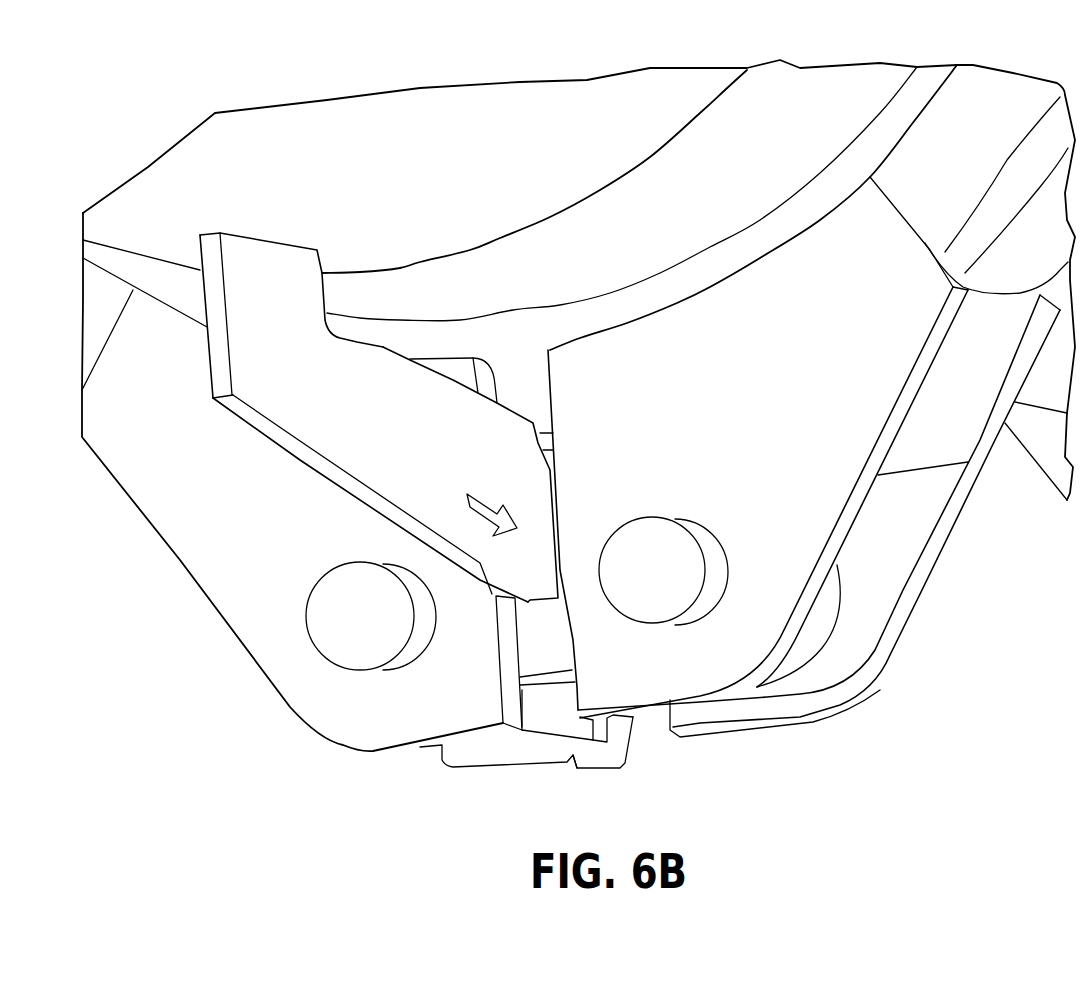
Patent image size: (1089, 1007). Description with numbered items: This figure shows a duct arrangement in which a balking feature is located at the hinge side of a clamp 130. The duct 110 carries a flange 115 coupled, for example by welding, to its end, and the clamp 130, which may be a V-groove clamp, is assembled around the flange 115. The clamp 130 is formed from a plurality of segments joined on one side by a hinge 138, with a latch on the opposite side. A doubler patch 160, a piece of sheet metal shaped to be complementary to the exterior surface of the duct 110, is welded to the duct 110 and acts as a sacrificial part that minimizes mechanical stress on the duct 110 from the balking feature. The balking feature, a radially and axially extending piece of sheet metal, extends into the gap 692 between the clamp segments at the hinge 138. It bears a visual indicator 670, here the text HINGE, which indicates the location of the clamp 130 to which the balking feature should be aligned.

The duct 110 is at (366, 117).
The flange 115 is at (790, 83).
The clamp 130 is at (1010, 90).
The hinge 138 is at (908, 555).
The doubler patch 160 is at (252, 370).
The visual indicator 670 is at (397, 413).
The gap 692 is at (547, 377).